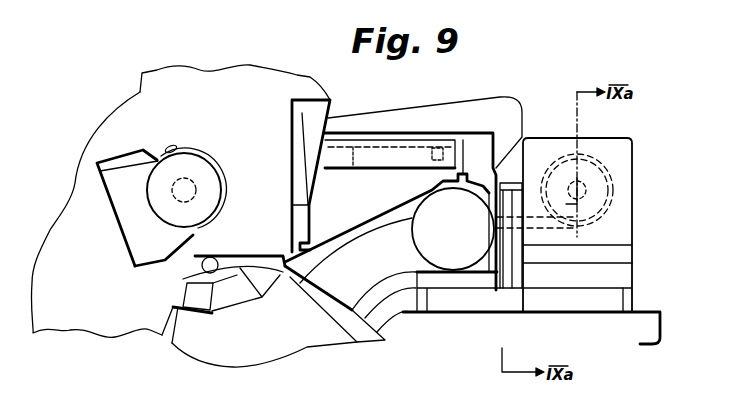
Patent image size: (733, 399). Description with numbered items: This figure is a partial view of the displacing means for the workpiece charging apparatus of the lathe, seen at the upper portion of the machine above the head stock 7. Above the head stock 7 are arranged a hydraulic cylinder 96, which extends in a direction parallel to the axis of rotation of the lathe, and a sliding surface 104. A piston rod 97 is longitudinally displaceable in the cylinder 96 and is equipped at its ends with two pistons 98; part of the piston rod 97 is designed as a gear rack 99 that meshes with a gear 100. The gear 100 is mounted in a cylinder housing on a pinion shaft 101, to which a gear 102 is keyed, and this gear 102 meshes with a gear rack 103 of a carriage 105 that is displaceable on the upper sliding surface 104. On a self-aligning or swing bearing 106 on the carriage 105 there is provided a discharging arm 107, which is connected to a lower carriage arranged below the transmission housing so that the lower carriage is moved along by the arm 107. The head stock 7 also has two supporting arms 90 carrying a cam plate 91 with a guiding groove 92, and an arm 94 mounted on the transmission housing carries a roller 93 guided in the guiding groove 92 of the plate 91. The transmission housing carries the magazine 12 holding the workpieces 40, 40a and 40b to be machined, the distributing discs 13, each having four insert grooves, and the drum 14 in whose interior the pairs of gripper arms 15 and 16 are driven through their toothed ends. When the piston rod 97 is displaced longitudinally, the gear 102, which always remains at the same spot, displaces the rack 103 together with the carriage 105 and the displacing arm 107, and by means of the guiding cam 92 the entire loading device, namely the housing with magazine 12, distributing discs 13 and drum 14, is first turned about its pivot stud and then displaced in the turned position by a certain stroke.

The head stock 7 is at (594, 362).
The magazine 12 is at (229, 111).
The distributing disc 13 is at (147, 157).
The drum 14 is at (231, 351).
The pair of gripper arms 15 is at (265, 282).
The pair of gripper arms 16 is at (192, 296).
The workpiece 40 is at (203, 265).
The workpiece 40a is at (223, 178).
The workpiece 40b is at (172, 146).
The supporting arm 90 is at (430, 117).
The cam plate 91 is at (377, 152).
The guiding groove 92 is at (353, 156).
The roller 93 is at (438, 157).
The arm 94 is at (310, 219).
The hydraulic cylinder 96 is at (588, 187).
The piston rod 97 is at (583, 191).
The piston 98 is at (587, 170).
The gear rack 99 is at (583, 198).
The gear 100 is at (580, 235).
The pinion shaft 101 is at (530, 222).
The gear 102 is at (502, 240).
The gear rack 103 is at (513, 268).
The sliding surface 104 is at (463, 293).
The carriage 105 is at (487, 274).
The swing bearing 106 is at (433, 252).
The discharging arm 107 is at (355, 272).